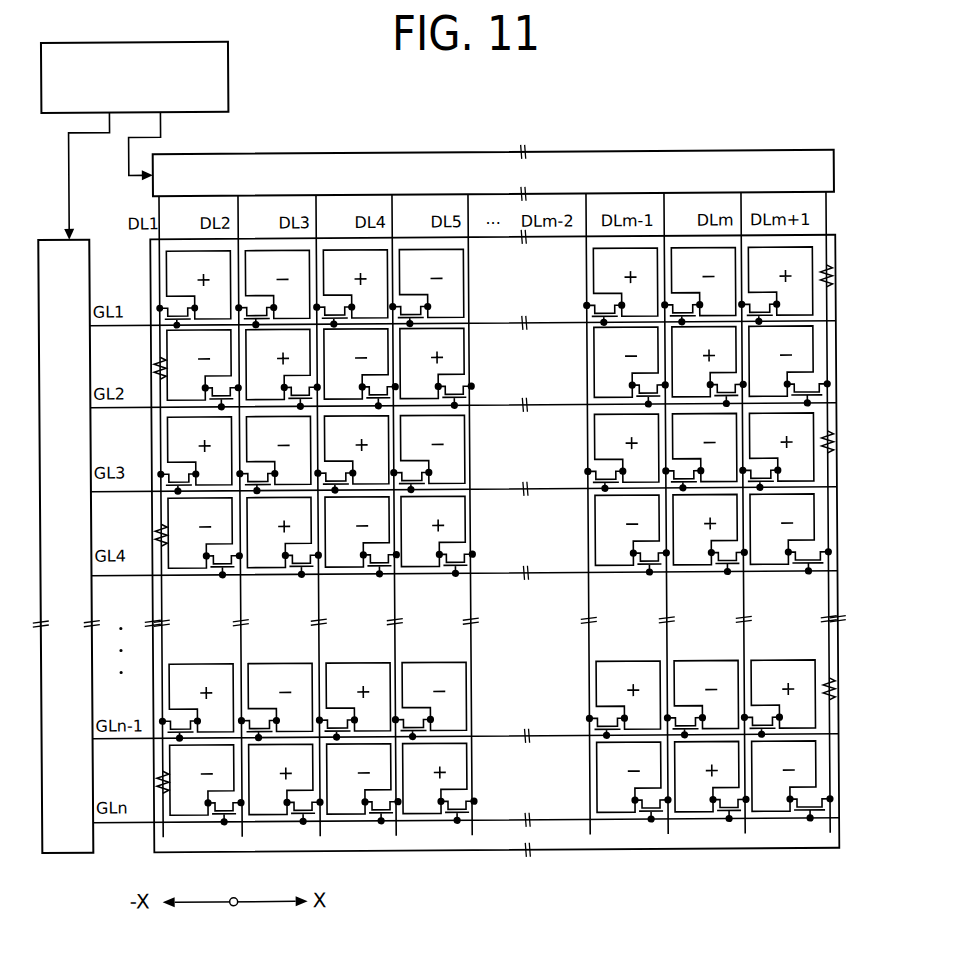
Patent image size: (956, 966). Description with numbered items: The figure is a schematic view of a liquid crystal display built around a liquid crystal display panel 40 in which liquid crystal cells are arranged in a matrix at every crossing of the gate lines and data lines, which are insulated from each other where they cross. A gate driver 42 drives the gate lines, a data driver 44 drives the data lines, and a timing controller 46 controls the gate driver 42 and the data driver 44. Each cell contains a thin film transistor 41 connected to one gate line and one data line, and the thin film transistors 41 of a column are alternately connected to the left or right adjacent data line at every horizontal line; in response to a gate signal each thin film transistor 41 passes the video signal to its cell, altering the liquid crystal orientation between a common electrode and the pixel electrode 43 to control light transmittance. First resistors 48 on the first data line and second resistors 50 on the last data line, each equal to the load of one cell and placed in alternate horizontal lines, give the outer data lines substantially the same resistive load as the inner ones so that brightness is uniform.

The liquid crystal display panel 40 is at (837, 357).
The thin film transistor 41 is at (153, 329).
The gate driver 42 is at (81, 850).
The pixel electrode 43 is at (173, 290).
The data driver 44 is at (578, 152).
The timing controller 46 is at (231, 51).
The first resistor 48 is at (155, 366).
The second resistor 50 is at (834, 279).